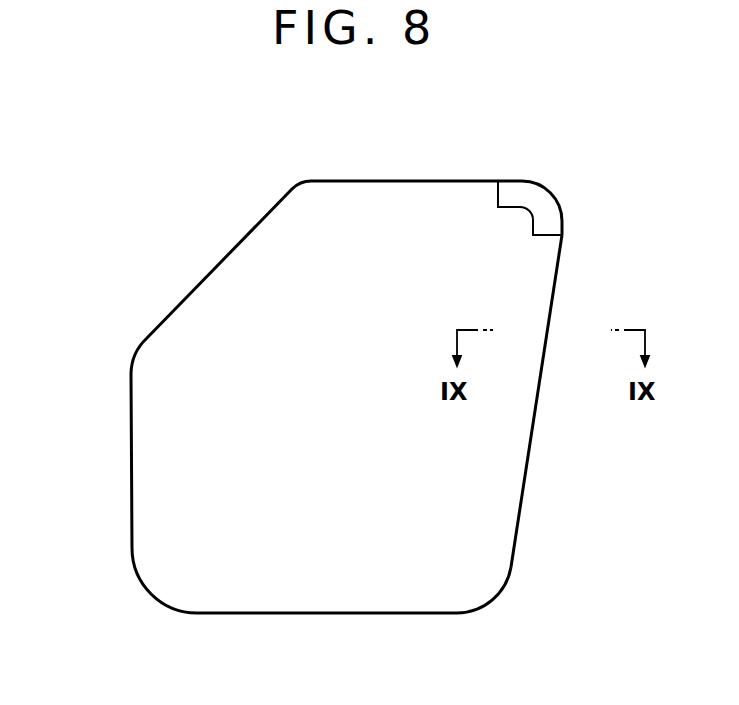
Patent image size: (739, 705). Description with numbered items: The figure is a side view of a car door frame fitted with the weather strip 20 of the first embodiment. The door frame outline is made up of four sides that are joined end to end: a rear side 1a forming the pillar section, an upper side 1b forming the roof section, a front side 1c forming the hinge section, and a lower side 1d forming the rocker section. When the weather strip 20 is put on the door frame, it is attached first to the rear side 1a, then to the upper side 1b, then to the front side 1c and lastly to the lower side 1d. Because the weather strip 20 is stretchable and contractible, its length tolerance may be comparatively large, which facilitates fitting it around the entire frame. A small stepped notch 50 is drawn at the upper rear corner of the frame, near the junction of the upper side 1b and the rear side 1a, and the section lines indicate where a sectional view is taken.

The rear side 1a is at (520, 510).
The upper side 1b is at (395, 181).
The front side 1c is at (131, 435).
The lower side 1d is at (345, 613).
The weather strip 20 is at (227, 253).
The corner notch 50 is at (526, 212).